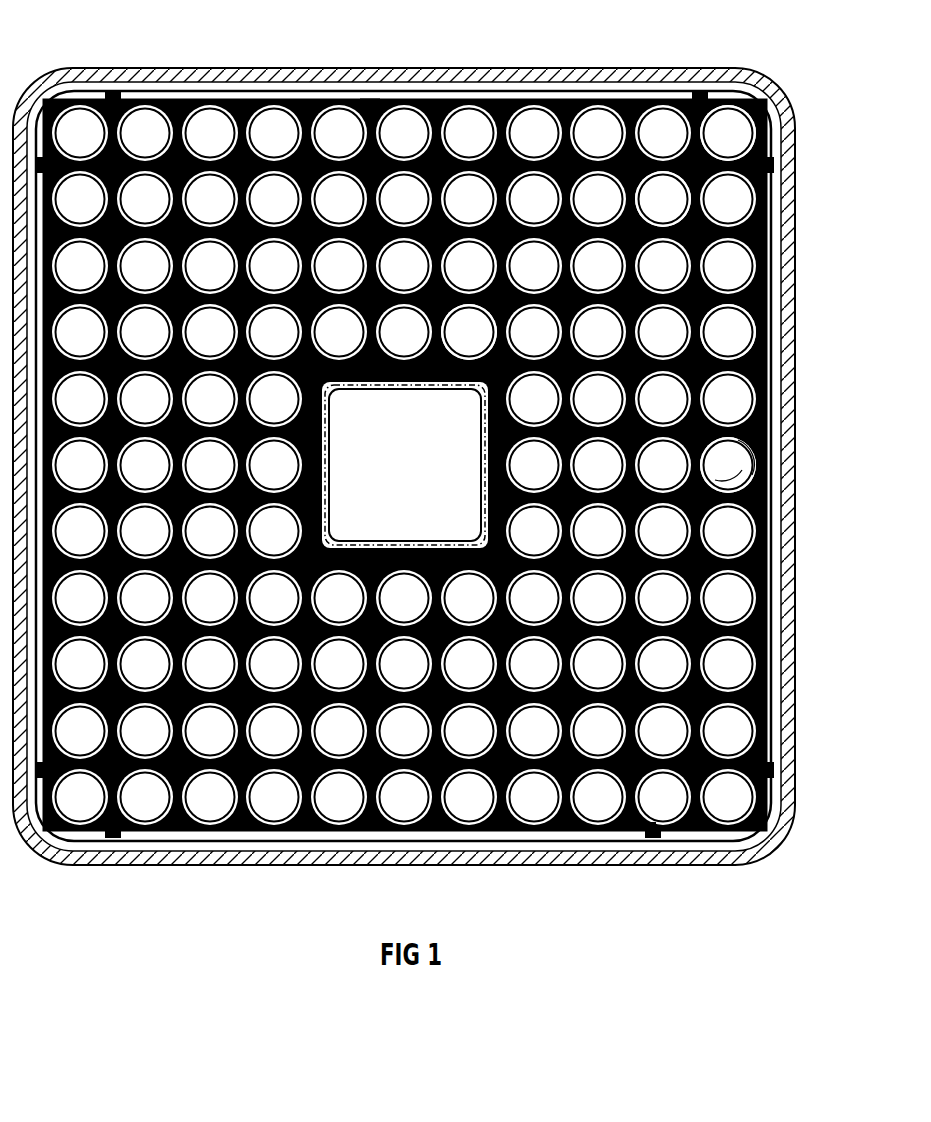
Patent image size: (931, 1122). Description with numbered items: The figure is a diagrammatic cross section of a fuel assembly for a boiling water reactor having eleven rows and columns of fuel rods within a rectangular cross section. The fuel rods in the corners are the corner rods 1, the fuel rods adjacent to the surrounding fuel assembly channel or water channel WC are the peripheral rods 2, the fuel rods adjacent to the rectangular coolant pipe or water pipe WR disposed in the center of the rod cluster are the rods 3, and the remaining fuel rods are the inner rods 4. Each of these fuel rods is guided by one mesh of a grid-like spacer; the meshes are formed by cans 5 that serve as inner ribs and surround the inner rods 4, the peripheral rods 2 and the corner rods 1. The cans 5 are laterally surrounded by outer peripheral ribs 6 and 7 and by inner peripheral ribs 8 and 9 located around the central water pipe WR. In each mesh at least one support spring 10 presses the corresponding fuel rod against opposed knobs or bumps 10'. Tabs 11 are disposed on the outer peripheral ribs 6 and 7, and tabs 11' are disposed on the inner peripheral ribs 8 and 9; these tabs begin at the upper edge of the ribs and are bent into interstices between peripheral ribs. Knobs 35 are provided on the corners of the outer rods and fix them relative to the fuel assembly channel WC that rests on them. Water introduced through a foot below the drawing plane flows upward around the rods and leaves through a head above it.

The corner rods 1 is at (728, 137).
The peripheral rods 2 is at (262, 100).
The fuel rods adjacent to the coolant pipe 3 is at (469, 343).
The inner rods 4 is at (665, 199).
The cans 5 is at (724, 318).
The outer peripheral rib 6 is at (770, 660).
The outer peripheral rib 7 is at (654, 832).
The inner peripheral rib 8 is at (483, 425).
The inner peripheral rib 9 is at (460, 550).
The support spring 10 is at (764, 460).
The knobs or bumps 10' is at (775, 476).
The tabs 11 is at (355, 67).
The tabs 11' is at (405, 539).
The knobs 35 is at (101, 94).
The water channel WC is at (465, 84).
The water pipe WR is at (328, 463).